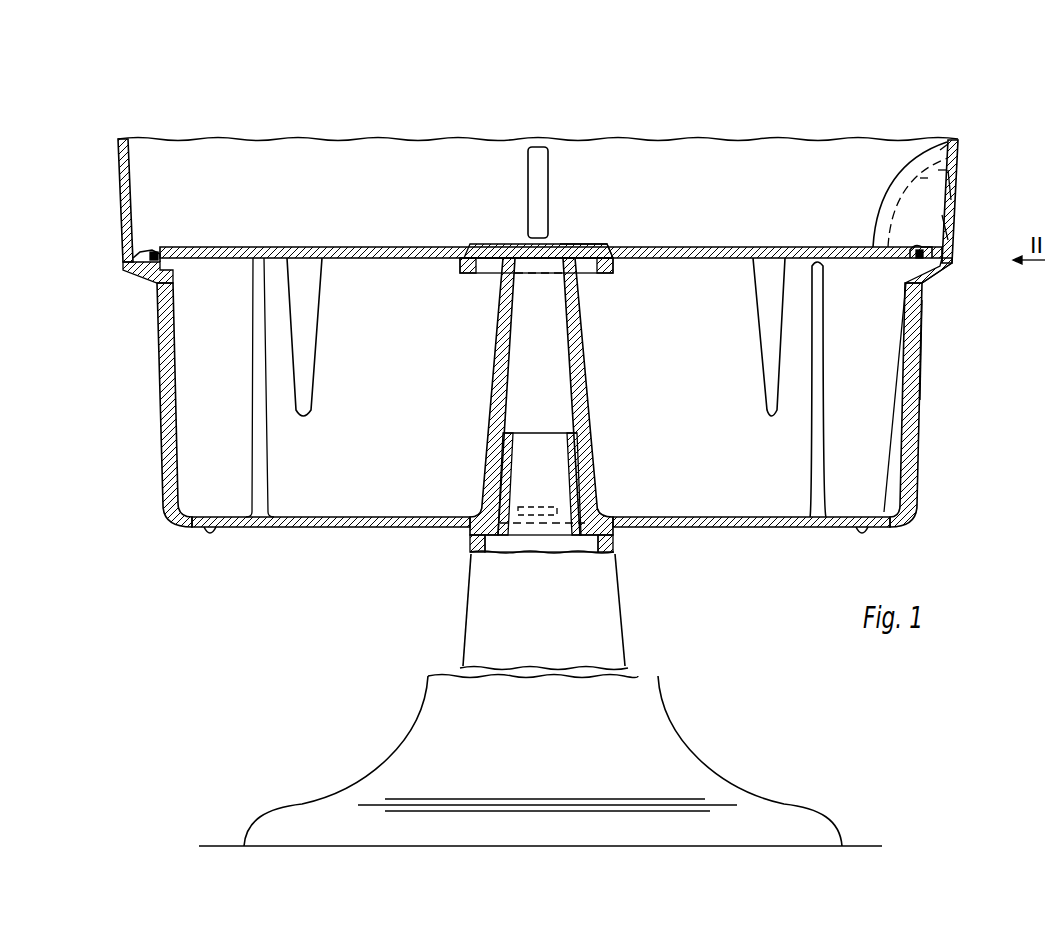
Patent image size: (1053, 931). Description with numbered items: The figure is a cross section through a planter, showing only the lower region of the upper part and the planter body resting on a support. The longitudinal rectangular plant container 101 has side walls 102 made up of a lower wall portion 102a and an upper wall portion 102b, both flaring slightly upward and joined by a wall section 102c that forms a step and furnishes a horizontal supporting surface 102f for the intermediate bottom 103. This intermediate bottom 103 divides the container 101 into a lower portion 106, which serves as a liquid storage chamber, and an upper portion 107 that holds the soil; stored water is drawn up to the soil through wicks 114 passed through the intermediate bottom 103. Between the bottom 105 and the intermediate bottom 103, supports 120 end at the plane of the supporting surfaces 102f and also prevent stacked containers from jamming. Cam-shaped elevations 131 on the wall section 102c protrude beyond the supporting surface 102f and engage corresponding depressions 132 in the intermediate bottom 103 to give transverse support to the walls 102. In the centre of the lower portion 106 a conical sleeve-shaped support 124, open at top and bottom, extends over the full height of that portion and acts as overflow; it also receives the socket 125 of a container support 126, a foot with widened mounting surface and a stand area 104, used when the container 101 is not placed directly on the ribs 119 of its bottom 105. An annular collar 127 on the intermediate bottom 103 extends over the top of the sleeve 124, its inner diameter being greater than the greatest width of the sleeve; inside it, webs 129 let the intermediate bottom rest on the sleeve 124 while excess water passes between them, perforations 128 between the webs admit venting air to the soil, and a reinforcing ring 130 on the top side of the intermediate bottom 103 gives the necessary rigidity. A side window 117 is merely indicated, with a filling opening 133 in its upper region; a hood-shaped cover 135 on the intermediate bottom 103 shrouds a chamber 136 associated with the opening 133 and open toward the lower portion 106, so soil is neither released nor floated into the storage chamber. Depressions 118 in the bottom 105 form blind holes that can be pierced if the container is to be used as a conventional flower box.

The plant container 101 is at (645, 157).
The side walls 102 is at (148, 283).
The lower wall portion 102a is at (909, 410).
The upper wall portion 102b is at (955, 190).
The wall section 102c is at (940, 271).
The supporting surface 102f is at (908, 246).
The intermediate bottom 103 is at (699, 247).
The stand area 104 is at (870, 845).
The bottom 105 is at (682, 517).
The lower portion 106 is at (715, 382).
The upper portion 107 is at (739, 198).
The wicks 114 is at (548, 186).
The side window 117 is at (902, 375).
The depressions 118 is at (334, 528).
The ribs 119 is at (210, 536).
The supports 120 is at (817, 423).
The sleeve-shaped support 124 is at (574, 344).
The socket 125 is at (576, 468).
The container support 126 is at (695, 750).
The annular collar 127 is at (601, 268).
The perforations 128 is at (482, 265).
The webs 129 is at (492, 246).
The reinforcing ring 130 is at (603, 245).
The cam-shaped elevations 131 is at (161, 268).
The depressions 132 is at (152, 249).
The filling opening 133 is at (949, 225).
The hood-shaped cover 135 is at (887, 198).
The chamber 136 is at (950, 152).